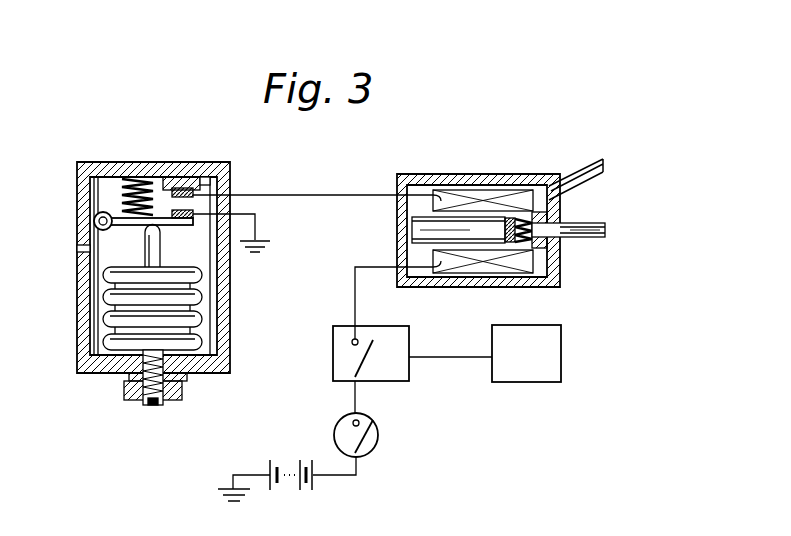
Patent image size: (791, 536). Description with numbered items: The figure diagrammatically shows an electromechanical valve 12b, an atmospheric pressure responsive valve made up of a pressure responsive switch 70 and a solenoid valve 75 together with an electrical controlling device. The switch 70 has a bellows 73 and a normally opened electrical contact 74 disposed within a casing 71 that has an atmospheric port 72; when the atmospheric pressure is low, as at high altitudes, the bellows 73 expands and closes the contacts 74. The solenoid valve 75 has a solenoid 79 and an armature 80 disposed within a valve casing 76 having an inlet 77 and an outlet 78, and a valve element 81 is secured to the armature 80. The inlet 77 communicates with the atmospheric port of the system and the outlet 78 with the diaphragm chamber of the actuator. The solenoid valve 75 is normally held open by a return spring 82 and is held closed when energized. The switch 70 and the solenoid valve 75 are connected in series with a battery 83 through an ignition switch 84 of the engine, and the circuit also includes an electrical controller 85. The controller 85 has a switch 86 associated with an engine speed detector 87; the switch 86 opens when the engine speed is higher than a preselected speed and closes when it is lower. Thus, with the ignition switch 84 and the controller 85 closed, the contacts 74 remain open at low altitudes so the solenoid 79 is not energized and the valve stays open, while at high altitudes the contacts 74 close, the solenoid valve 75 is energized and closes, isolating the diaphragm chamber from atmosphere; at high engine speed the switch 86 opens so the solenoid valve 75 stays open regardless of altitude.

The pressure responsive switch 70 is at (153, 250).
The casing 71 is at (77, 195).
The atmospheric port 72 is at (77, 252).
The bellows 73 is at (98, 322).
The electrical contact 74 is at (168, 198).
The electromechanical valve 12b is at (308, 195).
The solenoid valve 75 is at (514, 209).
The valve casing 76 is at (525, 174).
The inlet 77 is at (604, 166).
The outlet 78 is at (607, 232).
The solenoid 79 is at (413, 183).
The armature 80 is at (397, 253).
The valve element 81 is at (557, 262).
The return spring 82 is at (540, 214).
The battery 83 is at (284, 456).
The ignition switch 84 is at (380, 432).
The electrical controller 85 is at (394, 368).
The switch 86 is at (373, 356).
The engine speed detector 87 is at (562, 355).